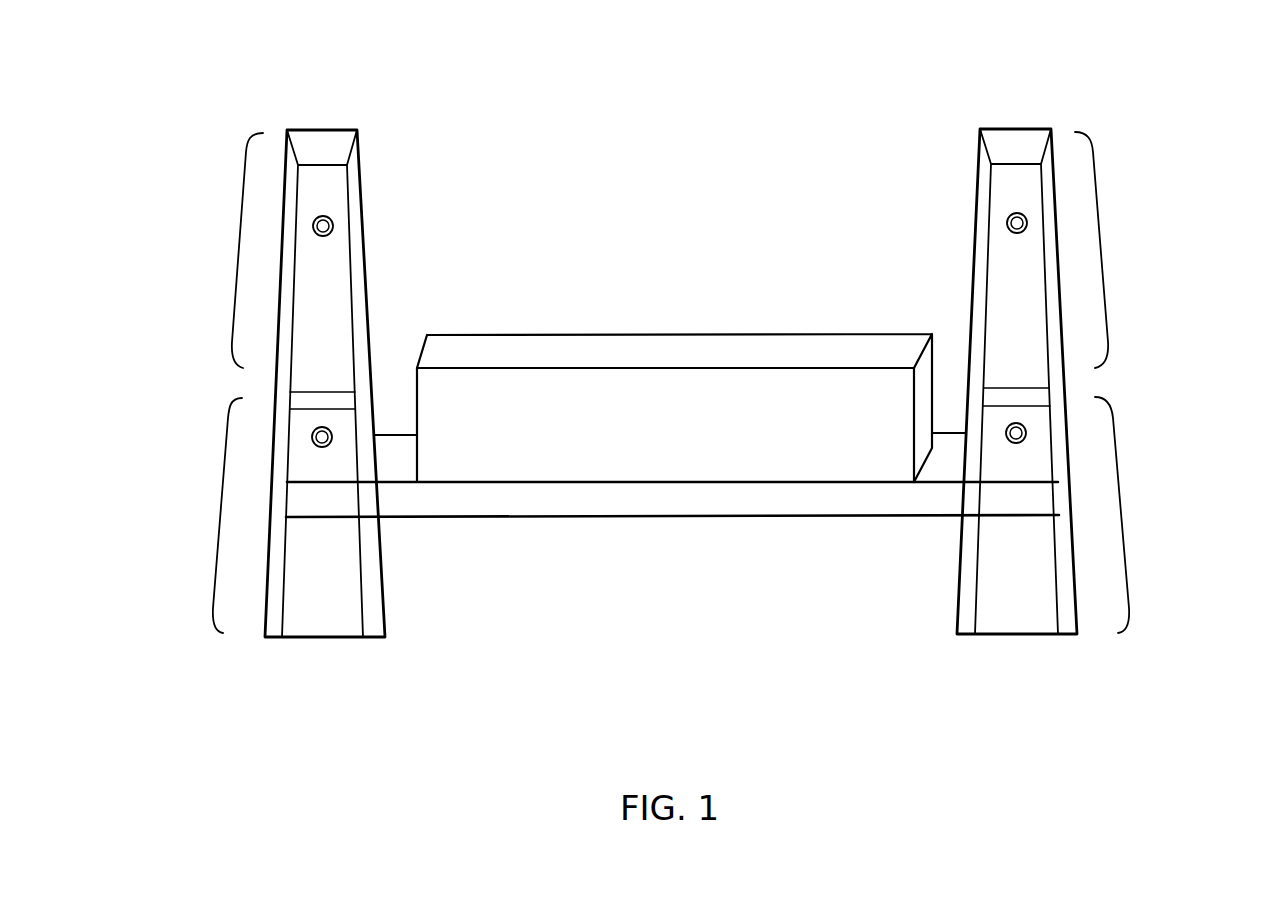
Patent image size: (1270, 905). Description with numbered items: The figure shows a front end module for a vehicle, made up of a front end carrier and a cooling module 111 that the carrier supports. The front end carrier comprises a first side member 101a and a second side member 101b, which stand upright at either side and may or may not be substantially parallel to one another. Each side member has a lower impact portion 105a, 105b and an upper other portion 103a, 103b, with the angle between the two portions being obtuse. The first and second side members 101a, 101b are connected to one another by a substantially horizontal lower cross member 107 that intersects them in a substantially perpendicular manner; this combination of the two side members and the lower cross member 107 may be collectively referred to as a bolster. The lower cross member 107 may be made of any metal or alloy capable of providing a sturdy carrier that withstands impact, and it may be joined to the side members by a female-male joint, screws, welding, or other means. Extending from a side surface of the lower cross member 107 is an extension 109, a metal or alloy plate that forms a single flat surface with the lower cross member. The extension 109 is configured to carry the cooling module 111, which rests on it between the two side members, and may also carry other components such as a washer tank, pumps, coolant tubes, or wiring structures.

The first side member 101a is at (244, 343).
The second side member 101b is at (1102, 341).
The other portion 103a is at (238, 248).
The other portion 103b is at (1102, 247).
The impact portion 105a is at (217, 514).
The impact portion 105b is at (1122, 513).
The lower cross member 107 is at (543, 502).
The extension 109 is at (382, 453).
The cooling module 111 is at (683, 350).